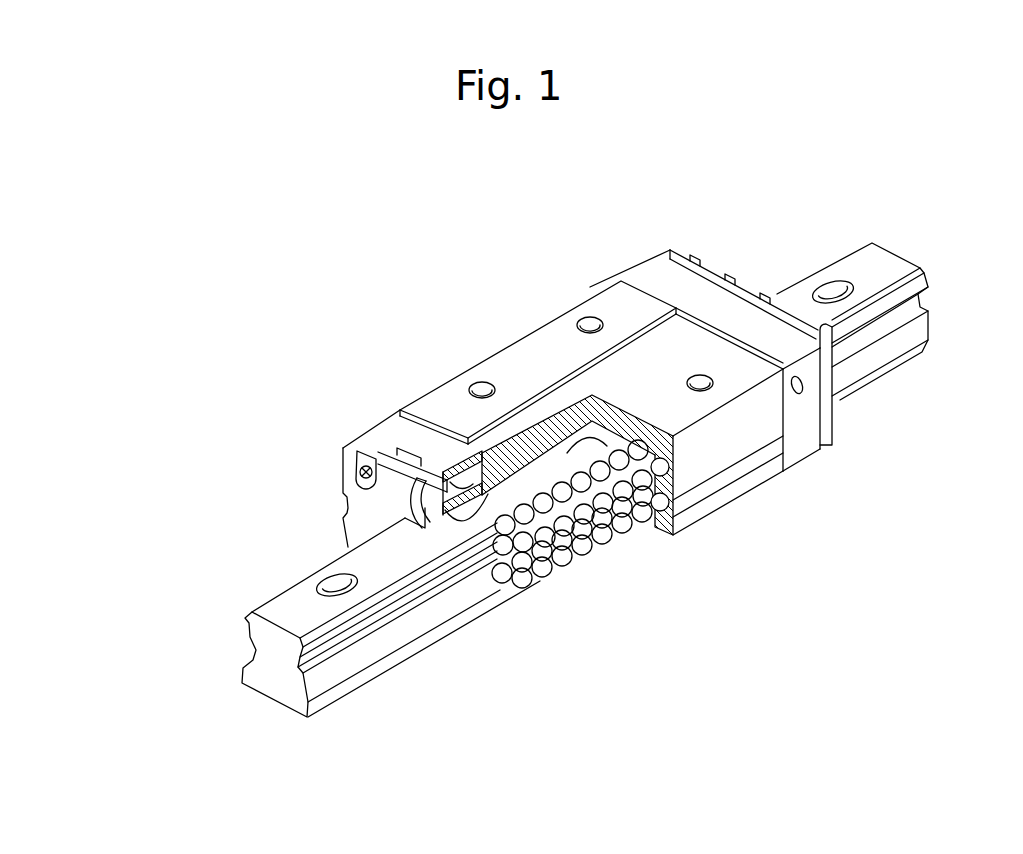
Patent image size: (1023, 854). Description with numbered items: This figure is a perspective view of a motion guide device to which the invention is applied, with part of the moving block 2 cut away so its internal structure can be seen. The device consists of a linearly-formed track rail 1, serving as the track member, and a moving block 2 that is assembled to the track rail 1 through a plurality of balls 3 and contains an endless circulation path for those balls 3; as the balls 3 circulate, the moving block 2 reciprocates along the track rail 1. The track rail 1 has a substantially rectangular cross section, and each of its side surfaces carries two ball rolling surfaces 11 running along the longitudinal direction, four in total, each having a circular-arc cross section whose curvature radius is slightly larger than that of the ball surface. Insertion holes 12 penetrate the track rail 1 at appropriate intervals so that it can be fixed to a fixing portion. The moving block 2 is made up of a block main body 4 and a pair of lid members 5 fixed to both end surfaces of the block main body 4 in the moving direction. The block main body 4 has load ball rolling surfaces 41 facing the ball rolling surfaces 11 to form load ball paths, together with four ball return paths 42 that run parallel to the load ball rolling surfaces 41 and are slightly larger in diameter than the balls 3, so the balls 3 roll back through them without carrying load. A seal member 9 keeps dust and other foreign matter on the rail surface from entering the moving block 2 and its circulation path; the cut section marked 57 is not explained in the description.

The track rail 1 is at (853, 250).
The moving block 2 is at (508, 342).
The balls 3 is at (628, 523).
The block main body 4 is at (597, 307).
The lid members 5 is at (393, 430).
The seal member 9 is at (355, 487).
The ball rolling surfaces 11 is at (242, 637).
The insertion holes 12 is at (330, 580).
The load ball rolling surfaces 41 is at (617, 447).
The ball return paths 42 is at (676, 512).
The ball return passage section 57 is at (458, 470).